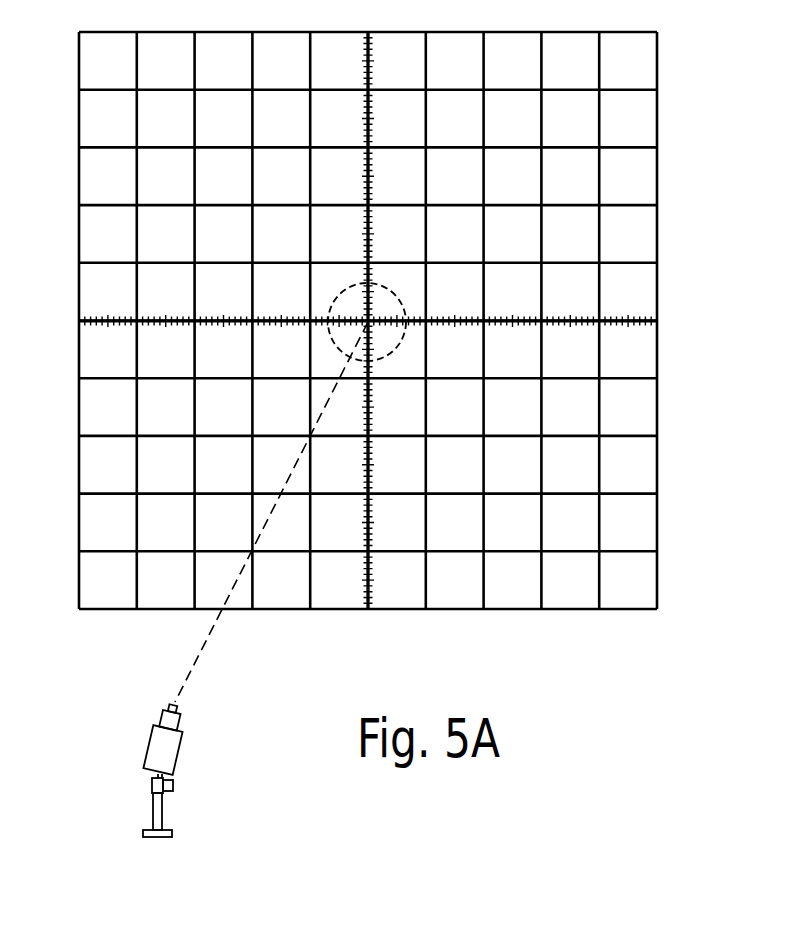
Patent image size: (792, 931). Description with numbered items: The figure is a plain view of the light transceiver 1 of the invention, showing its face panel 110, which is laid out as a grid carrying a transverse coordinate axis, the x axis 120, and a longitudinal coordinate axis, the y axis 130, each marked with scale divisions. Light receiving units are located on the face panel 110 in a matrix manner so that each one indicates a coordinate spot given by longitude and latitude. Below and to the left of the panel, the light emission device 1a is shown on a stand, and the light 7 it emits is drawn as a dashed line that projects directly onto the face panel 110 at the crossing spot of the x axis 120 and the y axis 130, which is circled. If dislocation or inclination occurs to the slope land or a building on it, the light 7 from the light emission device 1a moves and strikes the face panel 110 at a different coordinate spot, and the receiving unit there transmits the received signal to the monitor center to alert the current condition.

The light transceiver 1 is at (409, 304).
The face panel 110 is at (658, 178).
The transverse coordinate axis (x axis) 120 is at (640, 312).
The longitudinal coordinate axis (y axis) 130 is at (374, 50).
The light 7 is at (196, 663).
The light emission device 1a is at (170, 757).